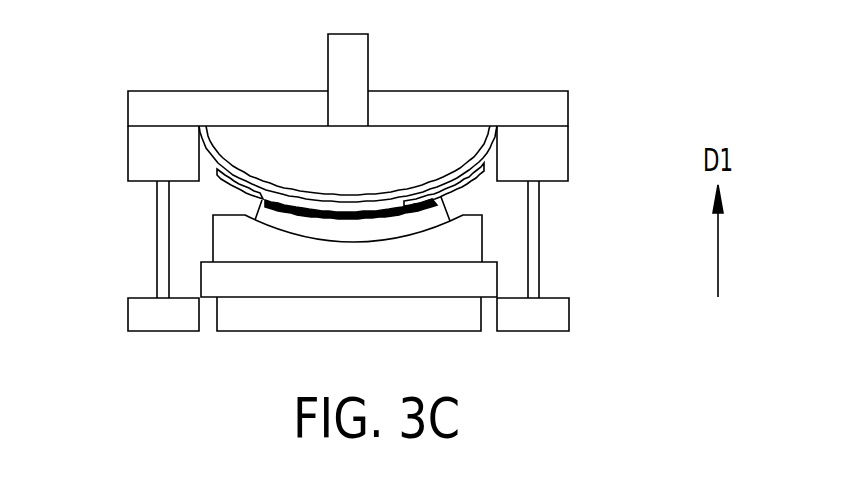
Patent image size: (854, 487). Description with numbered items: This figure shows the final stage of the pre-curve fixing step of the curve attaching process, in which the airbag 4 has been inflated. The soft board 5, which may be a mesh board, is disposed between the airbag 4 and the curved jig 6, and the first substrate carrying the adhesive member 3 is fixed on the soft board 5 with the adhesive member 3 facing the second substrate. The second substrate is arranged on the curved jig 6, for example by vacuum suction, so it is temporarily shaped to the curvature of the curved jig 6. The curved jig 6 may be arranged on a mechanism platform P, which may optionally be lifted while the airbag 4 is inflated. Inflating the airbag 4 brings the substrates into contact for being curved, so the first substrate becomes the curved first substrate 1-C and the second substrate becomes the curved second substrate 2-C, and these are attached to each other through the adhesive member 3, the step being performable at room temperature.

The curved first substrate 1-C is at (262, 191).
The curved second substrate 2-C is at (273, 222).
The adhesive member 3 is at (266, 201).
The airbag 4 is at (498, 140).
The soft board 5 is at (484, 169).
The curved jig 6 is at (483, 241).
The mechanism platform P is at (455, 288).